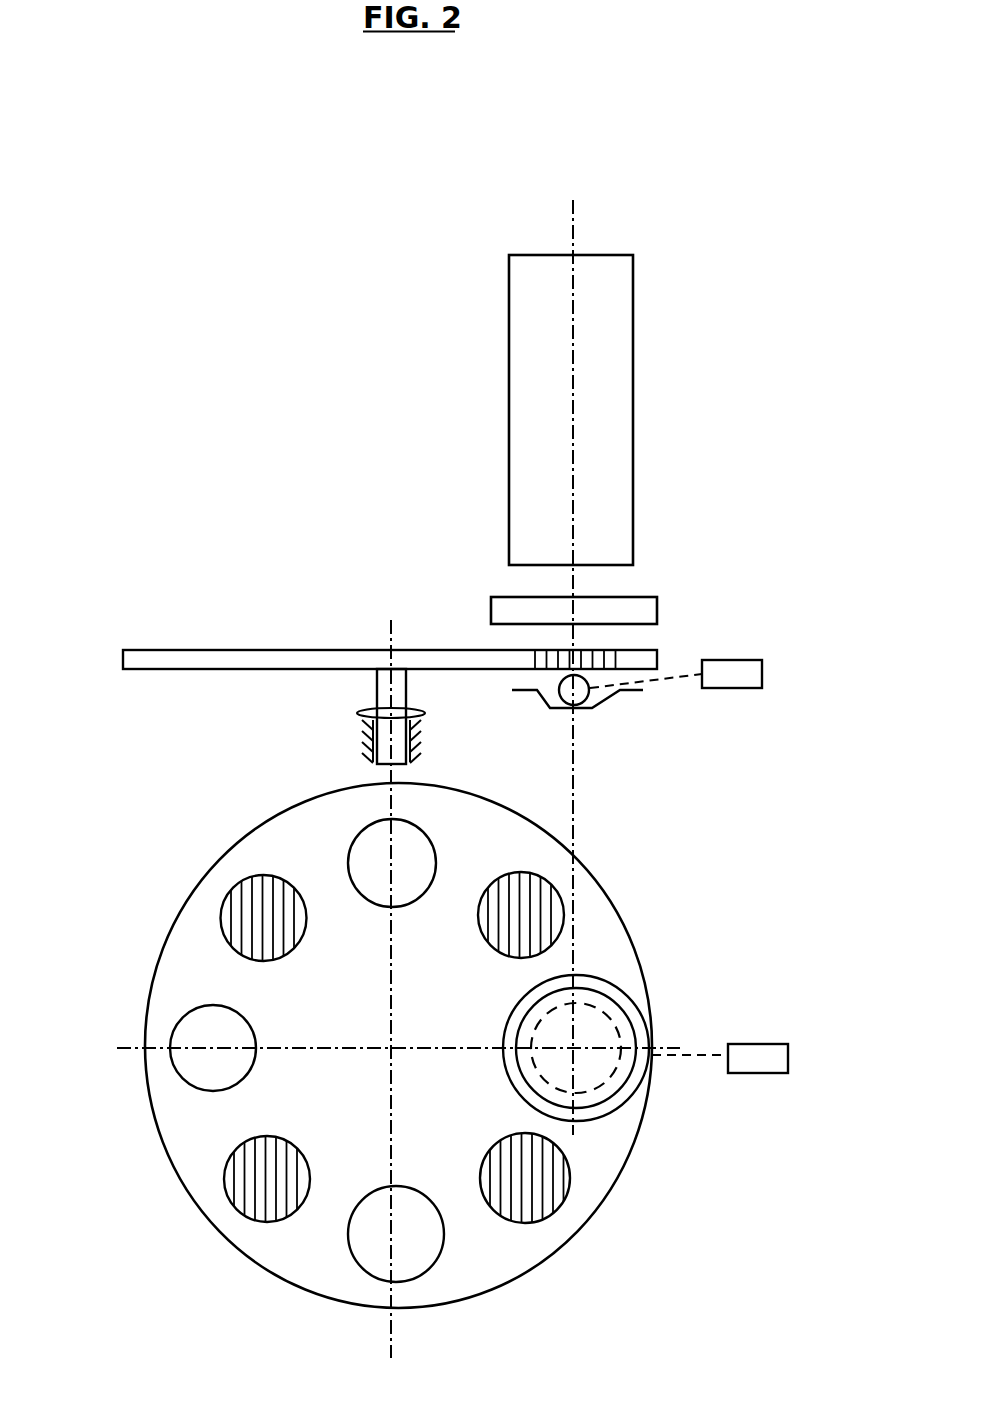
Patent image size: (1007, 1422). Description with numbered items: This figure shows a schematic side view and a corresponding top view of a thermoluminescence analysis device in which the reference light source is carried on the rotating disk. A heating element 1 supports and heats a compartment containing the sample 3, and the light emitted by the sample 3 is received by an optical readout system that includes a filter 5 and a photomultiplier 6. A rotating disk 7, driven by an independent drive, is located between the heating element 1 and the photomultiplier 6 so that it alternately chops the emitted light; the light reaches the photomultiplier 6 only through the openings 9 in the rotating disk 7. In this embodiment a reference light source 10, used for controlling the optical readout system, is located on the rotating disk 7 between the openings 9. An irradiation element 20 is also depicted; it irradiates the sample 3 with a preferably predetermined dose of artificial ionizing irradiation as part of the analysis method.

The heating element 1 is at (600, 708).
The sample 3 is at (583, 673).
The filter 5 is at (640, 612).
The photomultiplier 6 is at (612, 423).
The rotating disk 7 is at (607, 934).
The openings 9 is at (207, 1050).
The reference light source 10 is at (537, 1173).
The irradiation element 20 is at (762, 674).